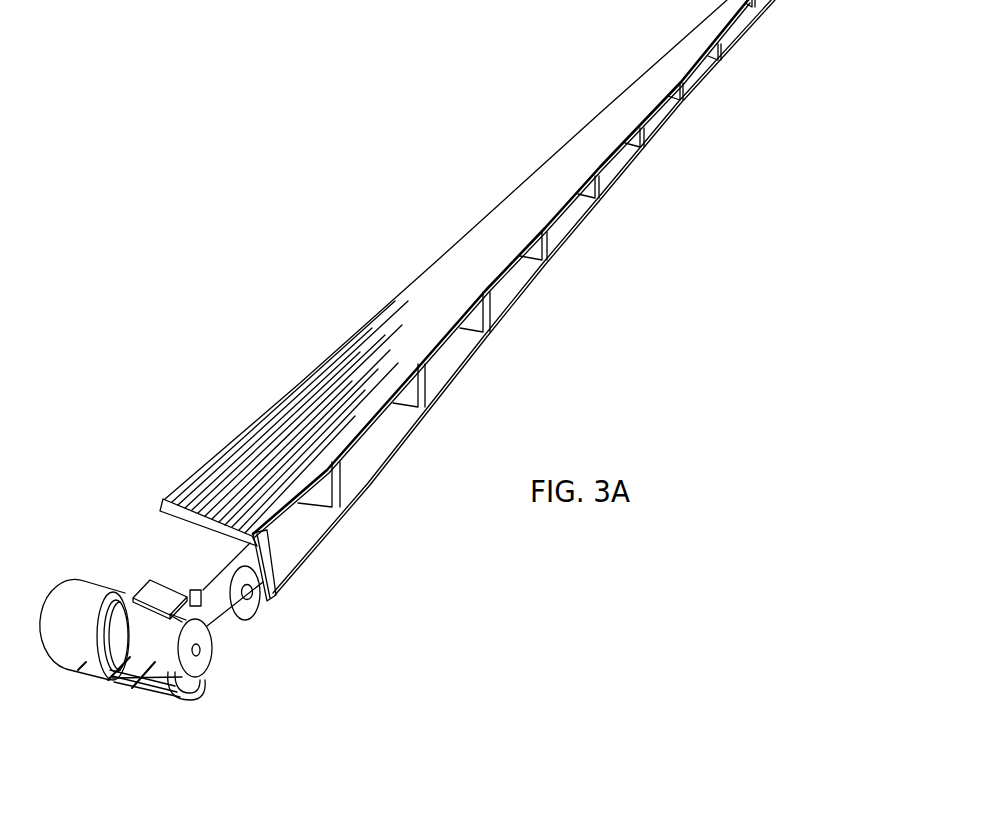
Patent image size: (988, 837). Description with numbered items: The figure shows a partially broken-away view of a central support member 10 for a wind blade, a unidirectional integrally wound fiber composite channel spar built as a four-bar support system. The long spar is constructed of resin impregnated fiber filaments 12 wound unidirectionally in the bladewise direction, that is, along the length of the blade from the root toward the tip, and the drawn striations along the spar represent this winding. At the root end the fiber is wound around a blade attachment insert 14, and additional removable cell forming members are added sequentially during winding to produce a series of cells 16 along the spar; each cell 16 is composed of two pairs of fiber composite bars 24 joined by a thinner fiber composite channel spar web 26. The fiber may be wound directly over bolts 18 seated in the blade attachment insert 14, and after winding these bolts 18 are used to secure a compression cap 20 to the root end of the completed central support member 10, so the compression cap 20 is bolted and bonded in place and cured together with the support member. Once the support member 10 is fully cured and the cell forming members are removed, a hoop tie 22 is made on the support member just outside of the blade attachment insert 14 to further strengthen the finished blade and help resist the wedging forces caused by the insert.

The central support member 10 is at (478, 213).
The resin impregnated fiber filaments 12 is at (258, 448).
The blade attachment insert 14 is at (223, 630).
The cells 16 is at (368, 483).
The bolts 18 is at (137, 680).
The compression cap 20 is at (82, 592).
The hoop tie 22 is at (277, 597).
The fiber composite bars 24 is at (196, 596).
The fiber composite channel spar web 26 is at (166, 583).